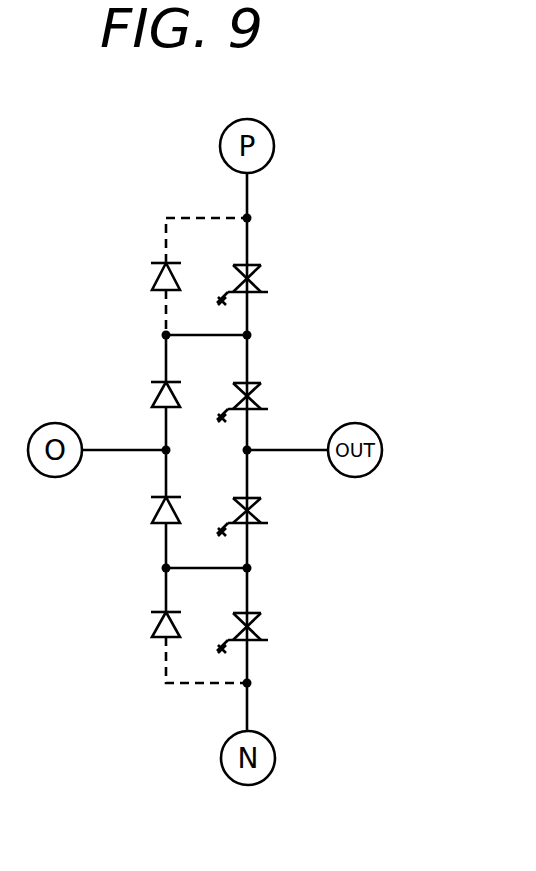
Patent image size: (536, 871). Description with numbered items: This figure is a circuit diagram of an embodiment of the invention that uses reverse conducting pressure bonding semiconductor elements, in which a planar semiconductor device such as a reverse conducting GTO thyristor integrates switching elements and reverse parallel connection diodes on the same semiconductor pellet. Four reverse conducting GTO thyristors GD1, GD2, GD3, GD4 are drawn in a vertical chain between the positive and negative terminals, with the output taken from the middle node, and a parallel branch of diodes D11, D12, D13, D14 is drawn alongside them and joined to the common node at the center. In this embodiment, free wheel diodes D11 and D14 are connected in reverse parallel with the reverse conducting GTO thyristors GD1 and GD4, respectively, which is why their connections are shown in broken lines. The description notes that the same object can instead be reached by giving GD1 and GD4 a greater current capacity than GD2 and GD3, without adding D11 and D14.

The free wheel diode D11 is at (150, 283).
The reverse parallel connection diode D12 is at (152, 398).
The reverse parallel connection diode D13 is at (152, 518).
The free wheel diode D14 is at (152, 632).
The reverse conducting GTO thyristor GD1 is at (261, 270).
The reverse conducting GTO thyristor GD2 is at (262, 390).
The reverse conducting GTO thyristor GD3 is at (263, 505).
The reverse conducting GTO thyristor GD4 is at (263, 617).